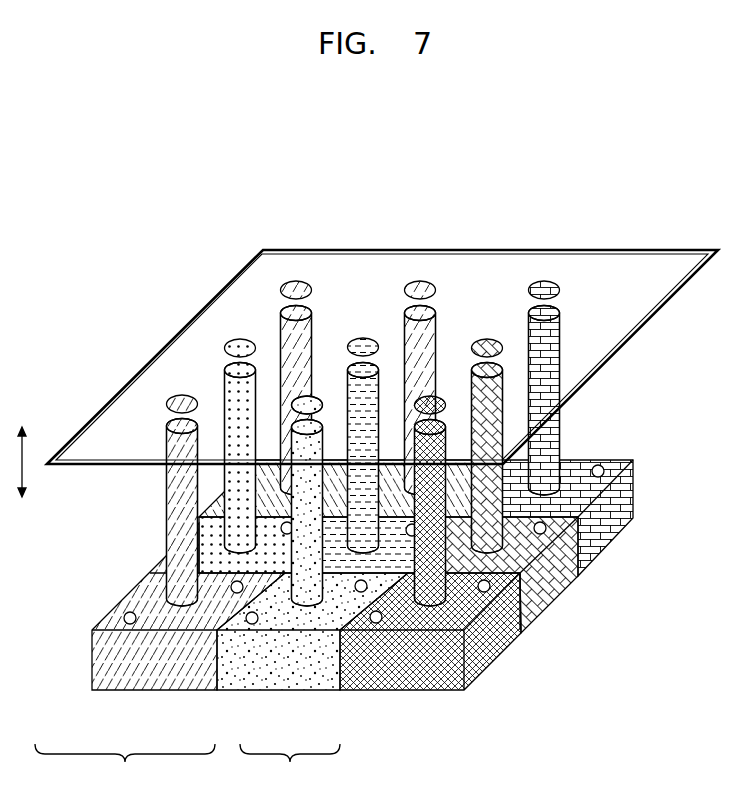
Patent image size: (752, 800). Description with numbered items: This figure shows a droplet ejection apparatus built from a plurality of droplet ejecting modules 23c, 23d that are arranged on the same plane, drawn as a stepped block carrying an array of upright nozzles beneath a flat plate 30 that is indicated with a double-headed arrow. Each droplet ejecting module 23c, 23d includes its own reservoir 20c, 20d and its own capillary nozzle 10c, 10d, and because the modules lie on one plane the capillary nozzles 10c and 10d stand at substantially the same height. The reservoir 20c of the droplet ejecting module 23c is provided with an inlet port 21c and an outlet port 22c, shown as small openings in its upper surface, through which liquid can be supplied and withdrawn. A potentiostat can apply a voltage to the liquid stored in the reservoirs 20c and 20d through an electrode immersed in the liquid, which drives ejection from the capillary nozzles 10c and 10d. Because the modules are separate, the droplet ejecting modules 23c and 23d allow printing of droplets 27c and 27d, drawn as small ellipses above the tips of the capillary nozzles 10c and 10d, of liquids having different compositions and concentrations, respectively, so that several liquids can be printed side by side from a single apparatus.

The upper plate 30 is at (125, 411).
The droplet 27c is at (181, 396).
The droplet 27d is at (303, 396).
The capillary nozzle 10c is at (182, 590).
The capillary nozzle 10d is at (308, 602).
The reservoir 20c is at (93, 668).
The reservoir 20d is at (258, 670).
The inlet port 21c is at (130, 625).
The outlet port 22c is at (236, 594).
The droplet ejecting module 23c is at (125, 762).
The droplet ejecting module 23d is at (290, 762).